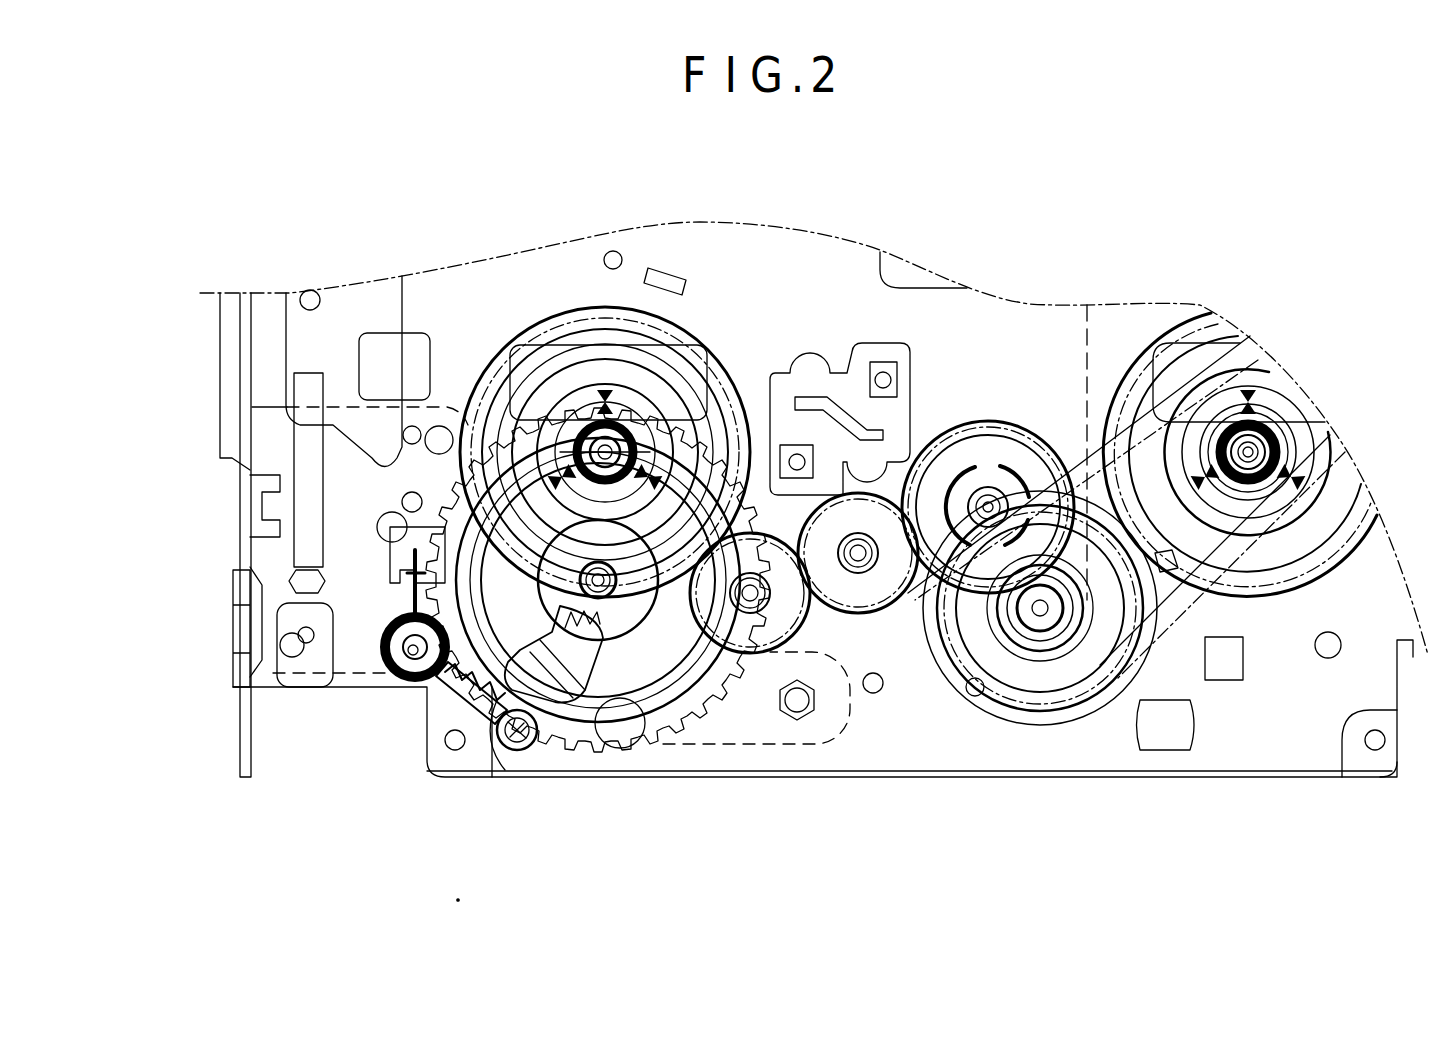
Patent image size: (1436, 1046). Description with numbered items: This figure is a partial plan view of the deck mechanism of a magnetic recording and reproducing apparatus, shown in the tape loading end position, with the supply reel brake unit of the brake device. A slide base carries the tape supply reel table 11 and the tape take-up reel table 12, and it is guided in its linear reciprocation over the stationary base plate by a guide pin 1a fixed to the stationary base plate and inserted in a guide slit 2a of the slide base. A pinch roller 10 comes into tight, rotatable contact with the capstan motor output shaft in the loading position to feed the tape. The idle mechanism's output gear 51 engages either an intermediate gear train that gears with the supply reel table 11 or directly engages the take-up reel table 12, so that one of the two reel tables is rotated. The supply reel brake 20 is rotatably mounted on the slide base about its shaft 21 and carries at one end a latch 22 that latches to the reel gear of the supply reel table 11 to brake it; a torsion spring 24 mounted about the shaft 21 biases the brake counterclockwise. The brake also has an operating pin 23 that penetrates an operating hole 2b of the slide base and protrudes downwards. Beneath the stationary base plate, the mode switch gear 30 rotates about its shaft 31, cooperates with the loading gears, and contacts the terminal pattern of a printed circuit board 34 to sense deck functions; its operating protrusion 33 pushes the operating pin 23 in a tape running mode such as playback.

The guide pin 1a is at (292, 578).
The guide slit 2a is at (300, 463).
The operating hole 2b is at (520, 750).
The pinch roller 10 is at (634, 307).
The tape supply reel table 11 is at (575, 307).
The tape take-up reel table 12 is at (1188, 360).
The supply reel brake 20 is at (572, 745).
The shaft 21 is at (393, 673).
The latch 22 is at (603, 595).
The operating pin 23 is at (512, 745).
The torsion spring 24 is at (440, 700).
The mode switch gear 30 is at (735, 703).
The shaft 31 is at (623, 592).
The operating protrusion 33 is at (567, 720).
The printed circuit board 34 is at (815, 745).
The output gear 51 is at (1005, 425).